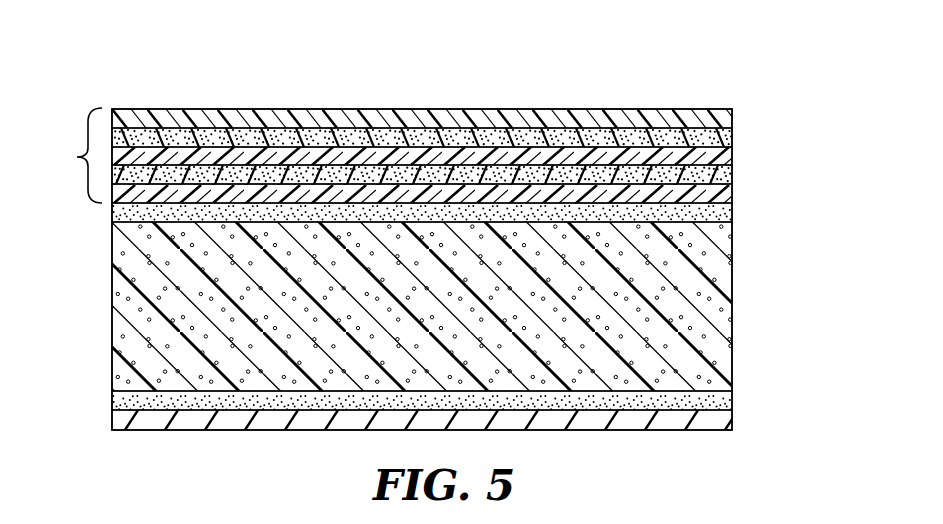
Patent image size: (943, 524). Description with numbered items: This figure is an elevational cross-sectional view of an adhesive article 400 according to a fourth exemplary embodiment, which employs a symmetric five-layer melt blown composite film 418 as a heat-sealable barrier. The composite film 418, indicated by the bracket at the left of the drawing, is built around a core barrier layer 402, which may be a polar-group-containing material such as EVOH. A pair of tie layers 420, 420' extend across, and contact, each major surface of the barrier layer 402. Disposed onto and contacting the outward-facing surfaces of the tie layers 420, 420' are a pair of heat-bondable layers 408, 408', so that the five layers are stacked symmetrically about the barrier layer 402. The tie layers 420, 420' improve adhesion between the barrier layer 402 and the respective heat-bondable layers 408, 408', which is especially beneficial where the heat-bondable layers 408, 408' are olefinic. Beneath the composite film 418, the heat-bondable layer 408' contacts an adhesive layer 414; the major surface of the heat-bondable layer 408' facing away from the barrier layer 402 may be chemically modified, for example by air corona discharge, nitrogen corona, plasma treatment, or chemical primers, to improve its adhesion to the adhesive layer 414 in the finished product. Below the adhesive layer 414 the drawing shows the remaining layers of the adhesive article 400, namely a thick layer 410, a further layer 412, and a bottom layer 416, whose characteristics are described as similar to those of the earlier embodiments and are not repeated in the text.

The adhesive article 400 is at (676, 66).
The core barrier layer 402 is at (733, 156).
The heat-bondable layer 408 is at (456, 101).
The heat-bondable layer 408' is at (467, 196).
The core layer 410 is at (725, 313).
The adhesive layer 412 is at (725, 400).
The adhesive layer 414 is at (733, 213).
The backing layer 416 is at (725, 420).
The composite film 418 is at (377, 155).
The tie layer 420 is at (464, 126).
The tie layer 420' is at (467, 170).